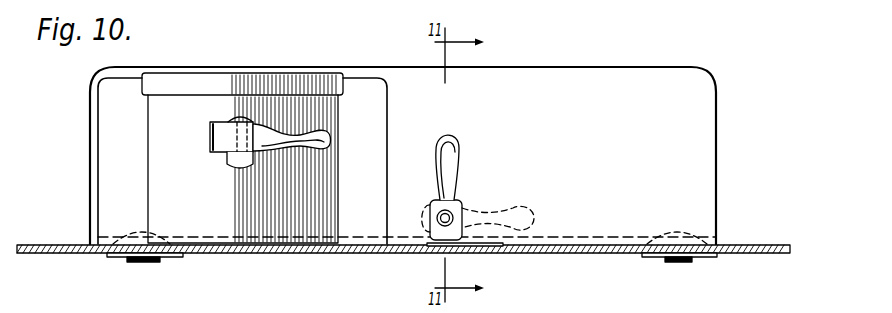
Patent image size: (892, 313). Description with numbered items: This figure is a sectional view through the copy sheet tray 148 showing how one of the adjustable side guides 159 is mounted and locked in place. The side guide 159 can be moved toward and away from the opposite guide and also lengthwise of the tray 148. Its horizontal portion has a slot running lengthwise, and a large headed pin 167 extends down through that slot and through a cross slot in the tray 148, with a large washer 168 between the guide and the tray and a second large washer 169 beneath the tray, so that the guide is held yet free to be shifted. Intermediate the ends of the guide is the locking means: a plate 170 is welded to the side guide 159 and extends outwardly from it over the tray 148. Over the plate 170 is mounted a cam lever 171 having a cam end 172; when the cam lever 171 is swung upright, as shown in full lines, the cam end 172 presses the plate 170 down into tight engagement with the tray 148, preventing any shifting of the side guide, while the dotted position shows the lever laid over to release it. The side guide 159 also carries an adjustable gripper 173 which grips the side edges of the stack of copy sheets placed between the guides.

The tray 148 is at (748, 247).
The side guide 159 is at (613, 70).
The large headed pin 167 is at (140, 230).
The large washer 168 is at (97, 254).
The large washer 169 is at (172, 258).
The plate 170 is at (492, 246).
The cam lever 171 is at (460, 145).
The cam end 172 is at (440, 236).
The adjustable gripper 173 is at (232, 220).